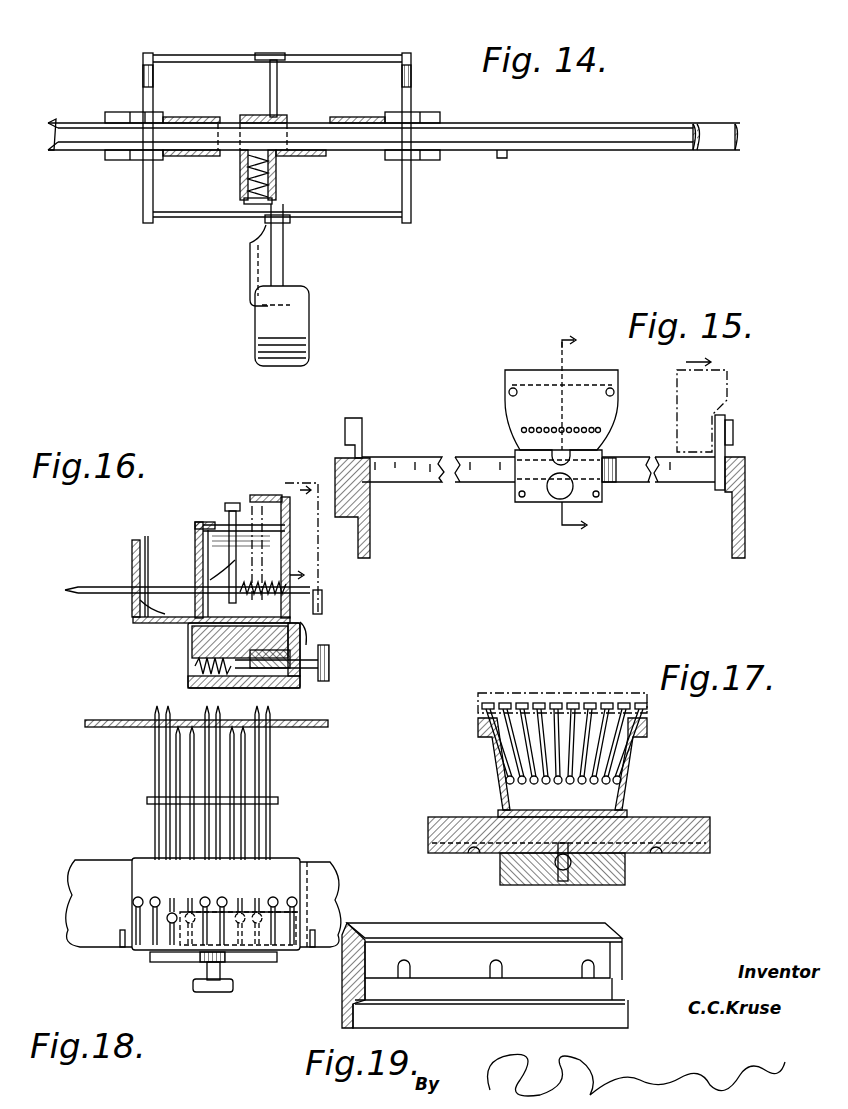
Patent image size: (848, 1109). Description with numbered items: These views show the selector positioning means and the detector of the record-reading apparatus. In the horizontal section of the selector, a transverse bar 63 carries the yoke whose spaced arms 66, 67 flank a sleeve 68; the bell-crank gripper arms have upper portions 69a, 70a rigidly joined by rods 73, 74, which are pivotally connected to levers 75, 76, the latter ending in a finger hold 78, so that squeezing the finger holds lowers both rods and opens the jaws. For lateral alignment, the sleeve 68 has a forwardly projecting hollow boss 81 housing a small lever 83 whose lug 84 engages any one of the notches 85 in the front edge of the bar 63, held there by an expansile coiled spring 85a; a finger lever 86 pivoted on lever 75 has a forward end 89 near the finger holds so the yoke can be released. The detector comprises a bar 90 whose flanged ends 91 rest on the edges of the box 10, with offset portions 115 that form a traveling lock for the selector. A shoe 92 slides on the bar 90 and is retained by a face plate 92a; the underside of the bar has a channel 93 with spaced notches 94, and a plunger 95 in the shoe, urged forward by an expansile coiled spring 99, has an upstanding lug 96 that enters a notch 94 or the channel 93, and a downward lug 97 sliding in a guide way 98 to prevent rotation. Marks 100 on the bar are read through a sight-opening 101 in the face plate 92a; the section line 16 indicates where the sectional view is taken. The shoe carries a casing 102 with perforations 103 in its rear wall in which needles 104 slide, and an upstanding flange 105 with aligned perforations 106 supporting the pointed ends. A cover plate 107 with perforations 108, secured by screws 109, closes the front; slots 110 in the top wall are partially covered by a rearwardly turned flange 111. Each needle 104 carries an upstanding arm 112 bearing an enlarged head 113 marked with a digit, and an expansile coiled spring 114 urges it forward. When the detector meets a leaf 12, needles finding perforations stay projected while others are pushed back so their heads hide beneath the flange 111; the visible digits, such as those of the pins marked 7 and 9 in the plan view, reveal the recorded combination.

In FIG. 18, the pin 7 is at (119, 929).
In FIG. 18, the pin 9 is at (319, 929).
In FIG. 15, the box 10 is at (744, 535).
In FIG. 18, the box 10 is at (75, 872).
In FIG. 18, the leaves or plates 12 is at (290, 728).
In FIG. 15, the section line 16— 16 is at (587, 428).
In FIG. 14, the transverse bar 63 is at (640, 124).
In FIG. 14, the arm of yoke 66 is at (190, 117).
In FIG. 14, the arm of yoke 67 is at (350, 117).
In FIG. 14, the sleeve 68 is at (285, 115).
In FIG. 14, the upper portion of gripper arm 69a is at (143, 85).
In FIG. 14, the upper portion of gripper arm 70a is at (411, 78).
In FIG. 14, the rod 73 is at (328, 55).
In FIG. 14, the rod 74 is at (343, 218).
In FIG. 14, the lever 75 is at (270, 96).
In FIG. 14, the lever 76 is at (285, 246).
In FIG. 14, the finger hold 78 is at (309, 326).
In FIG. 14, the hollow boss 81 is at (268, 186).
In FIG. 14, the small lever 83 is at (268, 165).
In FIG. 14, the lug 84 is at (262, 137).
In FIG. 14, the notches 85 is at (500, 160).
In FIG. 14, the expansile coiled spring 85a is at (240, 180).
In FIG. 14, the finger lever 86 is at (252, 200).
In FIG. 14, the forward end of finger lever 89 is at (250, 276).
In FIG. 15, the bar 90 is at (430, 483).
In FIG. 16, the bar 90 is at (302, 638).
In FIG. 17, the bar 90 is at (712, 840).
In FIG. 19, the bar 90 is at (416, 924).
In FIG. 15, the flanged ends 91 is at (357, 477).
In FIG. 17, the flanged ends 91 is at (626, 882).
In FIG. 16, the shoe 92 is at (188, 686).
In FIG. 15, the face plate 92a is at (545, 500).
In FIG. 16, the face plate 92a is at (302, 652).
In FIG. 19, the channel 93 is at (595, 995).
In FIG. 17, the notches 94 is at (660, 820).
In FIG. 19, the notches 94 is at (593, 960).
In FIG. 16, the plunger 95 is at (326, 682).
In FIG. 18, the plunger 95 is at (233, 984).
In FIG. 16, the upstanding lug 96 is at (200, 637).
In FIG. 16, the downwardly projecting lug 97 is at (255, 685).
In FIG. 17, the downwardly projecting lug 97 is at (545, 885).
In FIG. 16, the guide way 98 is at (236, 683).
In FIG. 17, the guide way 98 is at (562, 884).
In FIG. 16, the expansile coiled spring 99 is at (200, 662).
In FIG. 15, the marks 100 is at (498, 458).
In FIG. 18, the marks 100 is at (122, 950).
In FIG. 15, the sight-opening 101 is at (552, 462).
In FIG. 16, the casing 102 is at (197, 548).
In FIG. 17, the casing 102 is at (632, 757).
In FIG. 16, the perforations 103 is at (198, 578).
In FIG. 15, the needles 104 is at (596, 437).
In FIG. 16, the needles 104 is at (147, 540).
In FIG. 17, the needles 104 is at (527, 781).
In FIG. 16, the upstanding flange 105 is at (132, 565).
In FIG. 16, the perforations 106 is at (110, 591).
In FIG. 15, the cover plate 107 is at (604, 410).
In FIG. 16, the cover plate 107 is at (292, 560).
In FIG. 16, the perforations 108 is at (325, 598).
In FIG. 15, the screws 109 is at (508, 393).
In FIG. 16, the slots 110 is at (234, 510).
In FIG. 18, the slots 110 is at (257, 903).
In FIG. 16, the rearwardly turned flange 111 is at (278, 495).
In FIG. 18, the rearwardly turned flange 111 is at (285, 950).
In FIG. 17, the rearwardly turned flange 111 is at (577, 689).
In FIG. 16, the upstanding arm 112 is at (163, 623).
In FIG. 17, the upstanding arm 112 is at (497, 743).
In FIG. 16, the enlarged head 113 is at (250, 520).
In FIG. 18, the enlarged head 113 is at (206, 897).
In FIG. 17, the enlarged head 113 is at (490, 700).
In FIG. 16, the expansile coiled spring 114 is at (305, 584).
In FIG. 15, the offset portions 115 is at (355, 418).